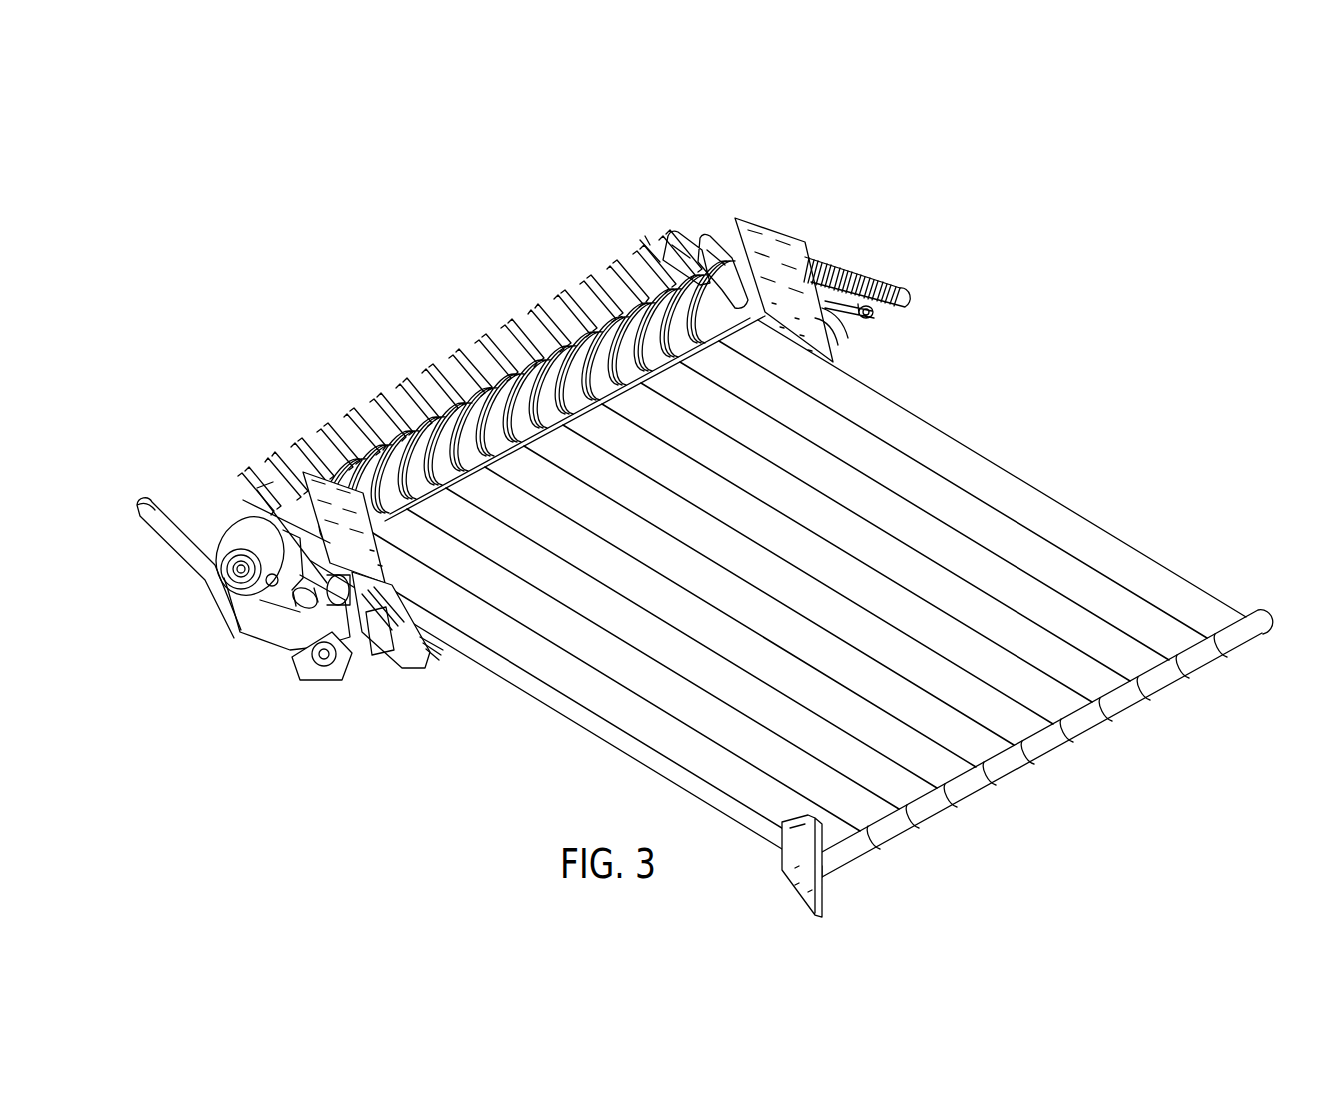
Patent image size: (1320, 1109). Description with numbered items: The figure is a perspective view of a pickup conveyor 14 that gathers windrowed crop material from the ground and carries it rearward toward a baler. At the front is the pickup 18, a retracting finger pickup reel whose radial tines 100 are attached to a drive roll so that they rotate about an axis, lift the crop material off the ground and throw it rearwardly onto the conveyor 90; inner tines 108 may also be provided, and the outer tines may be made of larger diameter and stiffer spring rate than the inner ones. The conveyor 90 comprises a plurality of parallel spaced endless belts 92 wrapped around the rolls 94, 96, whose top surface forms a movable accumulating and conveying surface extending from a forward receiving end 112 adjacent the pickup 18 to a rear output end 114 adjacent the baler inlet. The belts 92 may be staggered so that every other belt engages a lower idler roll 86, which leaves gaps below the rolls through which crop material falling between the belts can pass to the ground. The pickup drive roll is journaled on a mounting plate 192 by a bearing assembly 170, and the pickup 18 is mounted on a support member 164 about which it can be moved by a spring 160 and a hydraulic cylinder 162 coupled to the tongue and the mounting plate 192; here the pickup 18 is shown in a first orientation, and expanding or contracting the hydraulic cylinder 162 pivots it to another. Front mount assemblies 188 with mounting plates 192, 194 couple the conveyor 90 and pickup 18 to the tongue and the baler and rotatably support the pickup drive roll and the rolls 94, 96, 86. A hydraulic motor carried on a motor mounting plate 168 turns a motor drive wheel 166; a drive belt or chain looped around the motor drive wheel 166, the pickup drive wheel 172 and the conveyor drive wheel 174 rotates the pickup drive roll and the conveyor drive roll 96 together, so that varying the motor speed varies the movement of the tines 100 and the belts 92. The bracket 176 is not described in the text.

The pickup conveyor 14 is at (793, 559).
The pickup 18 is at (501, 386).
The lower idler roll 86 is at (428, 645).
The conveyor 90 is at (792, 597).
The endless belts 92 is at (1013, 490).
The roll 94 is at (1257, 613).
The conveyor drive roll 96 is at (765, 318).
The radial tines 100 is at (630, 248).
The inner tines 108 is at (458, 356).
The receiving end 112 is at (501, 333).
The output end 114 is at (1165, 718).
The spring 160 is at (876, 290).
The hydraulic cylinder 162 is at (847, 318).
The support member 164 is at (343, 585).
The motor drive wheel 166 is at (326, 665).
The motor mounting plate 168 is at (312, 660).
The bearing assembly 170 is at (245, 535).
The pickup drive wheel 172 is at (237, 569).
The conveyor drive wheel 174 is at (305, 588).
The support plate 176 is at (393, 635).
The front mount assemblies 188 is at (362, 655).
The mounting plate 192 is at (766, 232).
The mounting plate 194 is at (797, 870).